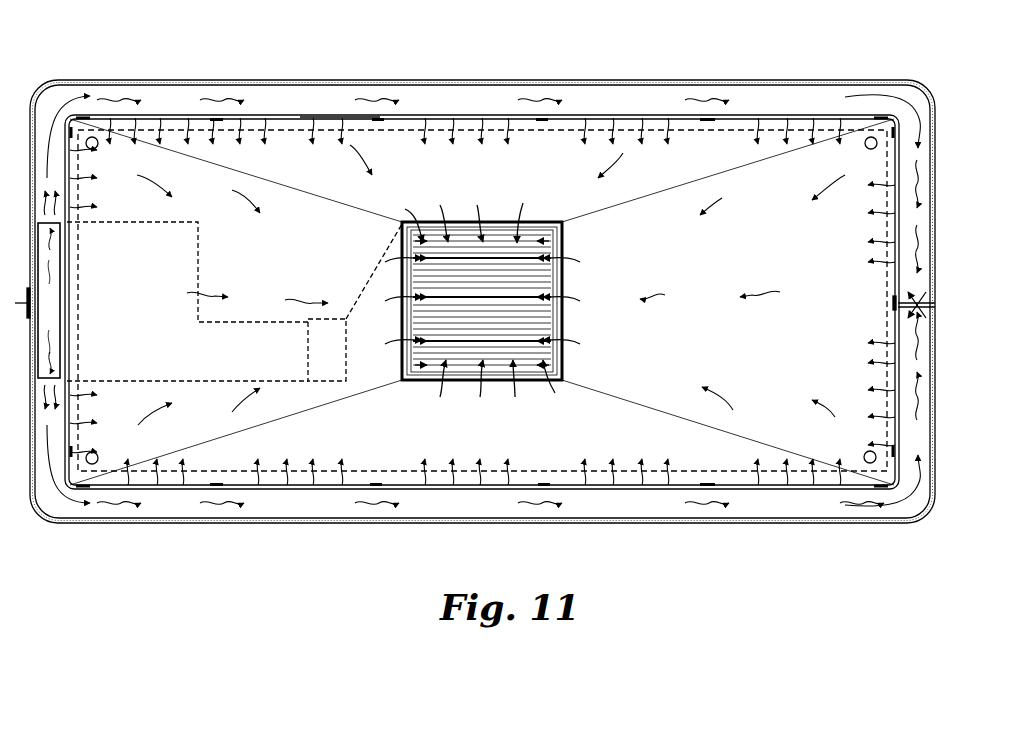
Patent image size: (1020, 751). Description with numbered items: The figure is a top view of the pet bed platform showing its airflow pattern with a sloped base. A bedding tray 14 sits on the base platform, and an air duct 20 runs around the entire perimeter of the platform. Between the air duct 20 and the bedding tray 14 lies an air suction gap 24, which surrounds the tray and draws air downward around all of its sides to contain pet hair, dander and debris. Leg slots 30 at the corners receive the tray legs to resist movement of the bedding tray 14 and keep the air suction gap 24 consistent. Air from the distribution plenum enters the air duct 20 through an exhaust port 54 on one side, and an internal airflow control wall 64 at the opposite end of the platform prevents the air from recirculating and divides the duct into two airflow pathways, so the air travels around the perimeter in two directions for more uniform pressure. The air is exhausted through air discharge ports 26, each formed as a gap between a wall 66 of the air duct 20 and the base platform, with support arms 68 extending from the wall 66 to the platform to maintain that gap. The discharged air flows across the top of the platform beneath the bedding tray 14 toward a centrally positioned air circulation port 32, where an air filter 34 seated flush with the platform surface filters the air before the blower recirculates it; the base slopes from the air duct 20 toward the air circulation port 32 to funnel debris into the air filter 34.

The bedding tray 14 is at (193, 130).
The air duct 20 is at (309, 100).
The air suction gap 24 is at (624, 125).
The air discharge port 26 is at (721, 124).
The leg slot 30 is at (91, 137).
The air circulation port 32 is at (482, 282).
The air filter 34 is at (533, 229).
The exhaust port 54 is at (48, 282).
The internal airflow control wall 64 is at (896, 305).
The wall 66 is at (338, 118).
The support arm 68 is at (538, 120).